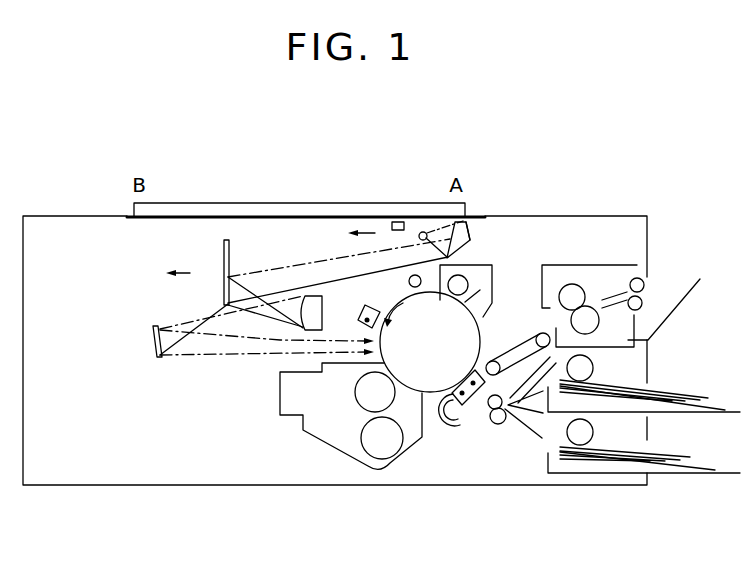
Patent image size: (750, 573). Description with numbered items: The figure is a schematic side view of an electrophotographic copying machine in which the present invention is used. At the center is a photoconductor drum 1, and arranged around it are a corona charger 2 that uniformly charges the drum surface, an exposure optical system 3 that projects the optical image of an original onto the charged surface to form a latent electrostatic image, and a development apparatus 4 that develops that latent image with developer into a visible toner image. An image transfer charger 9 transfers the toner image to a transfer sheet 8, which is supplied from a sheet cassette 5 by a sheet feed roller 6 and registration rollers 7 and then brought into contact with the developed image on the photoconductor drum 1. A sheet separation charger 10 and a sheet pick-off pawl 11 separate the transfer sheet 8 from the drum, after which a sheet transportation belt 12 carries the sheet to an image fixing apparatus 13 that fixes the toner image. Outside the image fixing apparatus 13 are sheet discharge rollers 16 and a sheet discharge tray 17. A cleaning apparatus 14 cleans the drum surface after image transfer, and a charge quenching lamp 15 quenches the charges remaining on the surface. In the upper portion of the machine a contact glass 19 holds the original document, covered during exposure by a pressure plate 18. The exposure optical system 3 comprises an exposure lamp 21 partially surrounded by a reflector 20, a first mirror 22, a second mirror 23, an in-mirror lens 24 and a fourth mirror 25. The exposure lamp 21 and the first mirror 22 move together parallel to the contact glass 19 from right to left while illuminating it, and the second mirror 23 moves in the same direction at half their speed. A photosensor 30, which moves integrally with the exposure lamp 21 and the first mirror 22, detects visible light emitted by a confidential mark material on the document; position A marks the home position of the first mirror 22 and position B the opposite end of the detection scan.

The photoconductor drum 1 is at (427, 395).
The corona charger 2 is at (362, 311).
The exposure optical system 3 is at (198, 355).
The development apparatus 4 is at (317, 433).
The sheet cassette 5 is at (703, 413).
The sheet feed roller 6 is at (594, 366).
The registration rollers 7 is at (501, 426).
The transfer sheet 8 is at (647, 393).
The image transfer charger 9 is at (467, 409).
The sheet separation charger 10 is at (492, 411).
The sheet pick-off pawl 11 is at (491, 331).
The sheet transportation belt 12 is at (522, 337).
The image fixing apparatus 13 is at (573, 287).
The cleaning apparatus 14 is at (488, 268).
The charge quenching lamp 15 is at (422, 276).
The sheet discharge rollers 16 is at (644, 284).
The sheet discharge tray 17 is at (701, 284).
The pressure plate 18 is at (249, 201).
The contact glass 19 is at (286, 214).
The reflector 20 is at (425, 232).
The exposure lamp 21 is at (431, 230).
The first mirror 22 is at (471, 241).
The second mirror 23 is at (223, 250).
The in-mirror lens 24 is at (306, 328).
The fourth mirror 25 is at (154, 357).
The photosensor 30 is at (398, 221).